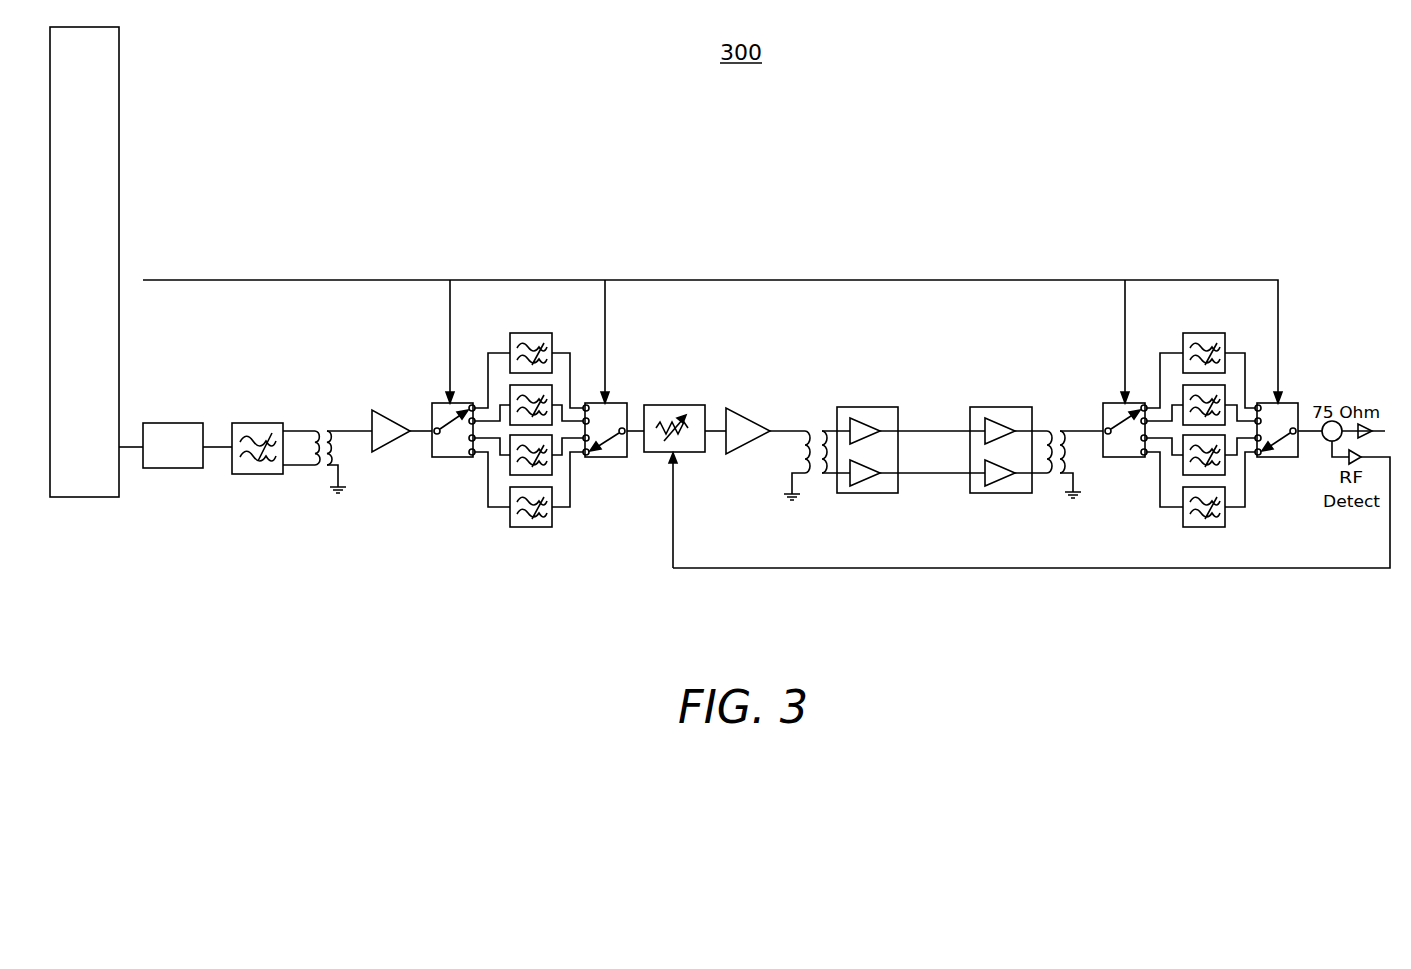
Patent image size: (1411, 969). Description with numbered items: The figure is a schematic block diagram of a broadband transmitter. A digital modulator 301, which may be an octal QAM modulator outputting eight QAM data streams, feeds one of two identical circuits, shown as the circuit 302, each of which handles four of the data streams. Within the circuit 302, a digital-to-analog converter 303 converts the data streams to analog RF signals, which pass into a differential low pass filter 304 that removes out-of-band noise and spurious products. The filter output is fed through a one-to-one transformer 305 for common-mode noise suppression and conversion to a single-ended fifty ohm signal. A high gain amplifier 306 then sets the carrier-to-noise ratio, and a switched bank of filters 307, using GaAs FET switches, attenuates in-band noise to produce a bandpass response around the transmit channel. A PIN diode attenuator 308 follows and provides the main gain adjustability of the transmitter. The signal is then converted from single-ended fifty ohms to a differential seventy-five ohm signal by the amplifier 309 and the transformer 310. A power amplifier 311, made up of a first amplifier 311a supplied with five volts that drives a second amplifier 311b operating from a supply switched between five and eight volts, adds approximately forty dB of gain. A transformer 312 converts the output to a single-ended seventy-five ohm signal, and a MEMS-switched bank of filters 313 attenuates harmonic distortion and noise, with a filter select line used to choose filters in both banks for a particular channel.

The digital modulator 301 is at (97, 497).
The circuit 302 is at (652, 241).
The digital-to-analog converter (DAC) 303 is at (176, 468).
The differential low pass filter 304 is at (258, 474).
The 1:1 transformer 305 is at (321, 509).
The high gain amplifier 306 is at (390, 452).
The switched bank of filters 307 is at (530, 541).
The PIN diode attenuator 308 is at (657, 342).
The amplifier 309 is at (749, 419).
The transformer 310 is at (812, 497).
The power amplifier 311 is at (923, 537).
The first amplifier 311a is at (865, 407).
The second amplifier 311b is at (1002, 407).
The transformer 312 is at (1070, 534).
The MEMS-switched bank of filters 313 is at (1203, 540).